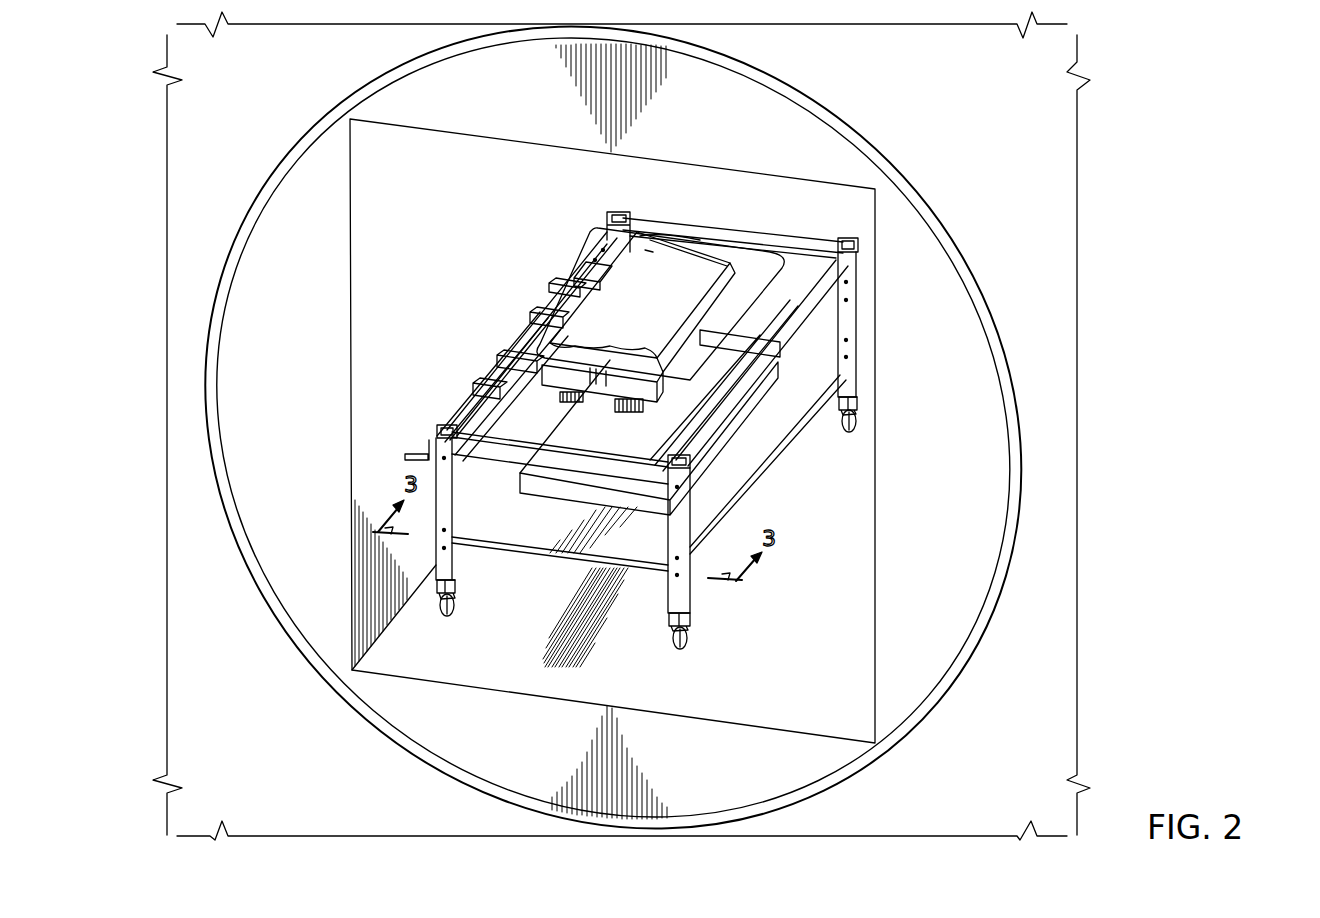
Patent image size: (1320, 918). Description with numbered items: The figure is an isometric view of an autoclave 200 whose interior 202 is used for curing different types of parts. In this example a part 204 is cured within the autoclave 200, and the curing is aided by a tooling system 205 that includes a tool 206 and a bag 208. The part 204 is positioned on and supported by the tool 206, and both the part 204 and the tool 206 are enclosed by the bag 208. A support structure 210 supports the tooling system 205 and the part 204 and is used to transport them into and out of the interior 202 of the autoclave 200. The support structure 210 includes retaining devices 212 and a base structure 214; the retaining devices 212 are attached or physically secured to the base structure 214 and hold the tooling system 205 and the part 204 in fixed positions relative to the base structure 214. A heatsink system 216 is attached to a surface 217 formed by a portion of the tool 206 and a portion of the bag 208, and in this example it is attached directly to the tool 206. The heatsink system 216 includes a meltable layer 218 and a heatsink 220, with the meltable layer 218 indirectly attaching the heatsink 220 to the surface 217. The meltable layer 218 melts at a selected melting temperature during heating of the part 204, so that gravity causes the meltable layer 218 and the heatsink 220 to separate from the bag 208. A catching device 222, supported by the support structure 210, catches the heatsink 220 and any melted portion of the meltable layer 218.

The autoclave 200 is at (296, 99).
The interior 202 is at (479, 206).
The part 204 is at (700, 268).
The tooling system 205 is at (752, 250).
The tool 206 is at (610, 370).
The bag 208 is at (658, 248).
The support structure 210 is at (588, 226).
The retaining devices 212 is at (550, 281).
The base structure 214 is at (826, 270).
The heatsink system 216 is at (537, 396).
The surface 217 is at (596, 273).
The meltable layer 218 is at (612, 404).
The heatsink 220 is at (672, 409).
The catching device 222 is at (552, 490).